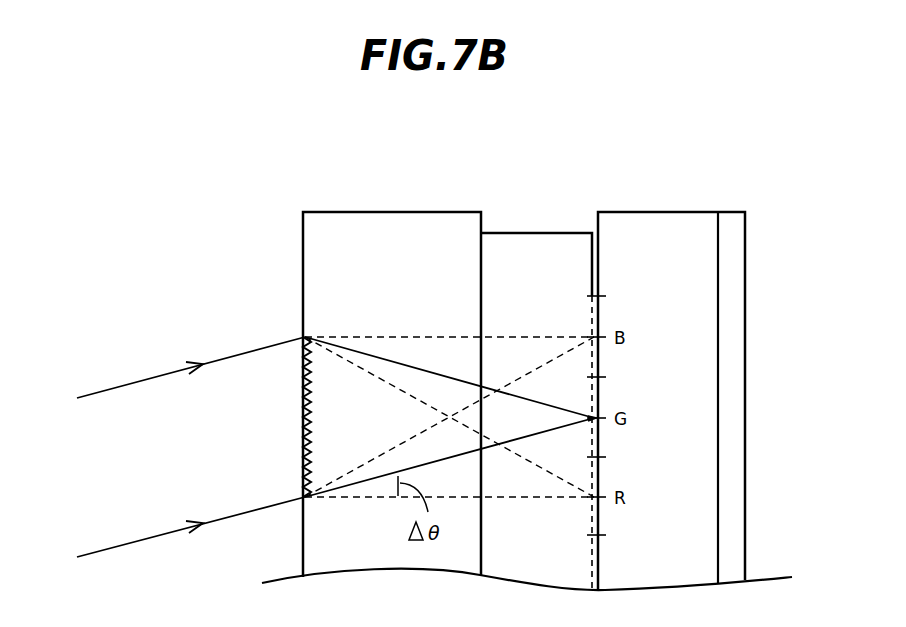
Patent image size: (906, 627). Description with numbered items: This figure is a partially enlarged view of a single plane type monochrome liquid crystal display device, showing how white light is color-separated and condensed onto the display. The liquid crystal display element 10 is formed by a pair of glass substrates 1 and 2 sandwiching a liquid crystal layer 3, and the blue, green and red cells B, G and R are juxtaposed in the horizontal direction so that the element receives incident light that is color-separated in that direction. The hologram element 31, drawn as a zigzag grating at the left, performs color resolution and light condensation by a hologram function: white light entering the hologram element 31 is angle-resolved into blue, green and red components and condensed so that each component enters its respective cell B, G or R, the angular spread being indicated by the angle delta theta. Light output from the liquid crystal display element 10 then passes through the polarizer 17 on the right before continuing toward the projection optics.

The hologram element 31 is at (386, 241).
The liquid crystal display element 10 is at (665, 147).
The glass substrate 1 is at (527, 256).
The liquid crystal layer 3 is at (596, 228).
The glass substrate 2 is at (647, 247).
The polarizer 17 is at (731, 236).